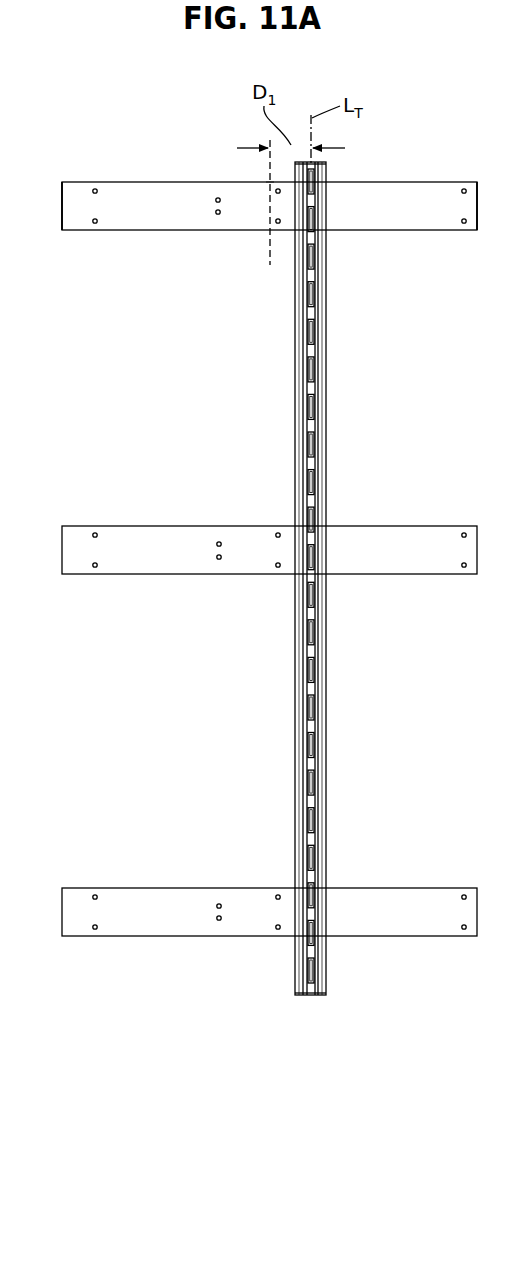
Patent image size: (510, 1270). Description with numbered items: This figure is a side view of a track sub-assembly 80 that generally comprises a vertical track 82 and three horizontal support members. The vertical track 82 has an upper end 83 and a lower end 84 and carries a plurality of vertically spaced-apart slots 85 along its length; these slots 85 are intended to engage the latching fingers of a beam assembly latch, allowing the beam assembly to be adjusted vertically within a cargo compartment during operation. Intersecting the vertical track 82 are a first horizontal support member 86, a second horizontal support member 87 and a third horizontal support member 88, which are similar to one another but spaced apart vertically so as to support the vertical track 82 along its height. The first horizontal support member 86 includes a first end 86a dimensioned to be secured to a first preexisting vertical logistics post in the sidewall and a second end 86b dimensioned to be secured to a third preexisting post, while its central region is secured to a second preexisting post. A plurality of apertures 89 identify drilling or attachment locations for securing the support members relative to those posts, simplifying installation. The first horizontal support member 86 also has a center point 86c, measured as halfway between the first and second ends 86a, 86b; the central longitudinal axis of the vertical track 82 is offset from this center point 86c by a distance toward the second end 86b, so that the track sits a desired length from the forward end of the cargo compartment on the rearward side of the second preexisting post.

The track sub-assembly 80 is at (128, 166).
The vertical track 82 is at (294, 400).
The upper end 83 is at (327, 177).
The lower end 84 is at (326, 988).
The vertically spaced-apart slots 85 is at (314, 340).
The first horizontal support member 86 is at (60, 182).
The first end 86a is at (63, 231).
The second end 86b is at (470, 232).
The center point 86c is at (270, 244).
The second horizontal support member 87 is at (81, 524).
The third horizontal support member 88 is at (83, 886).
The apertures 89 is at (96, 222).